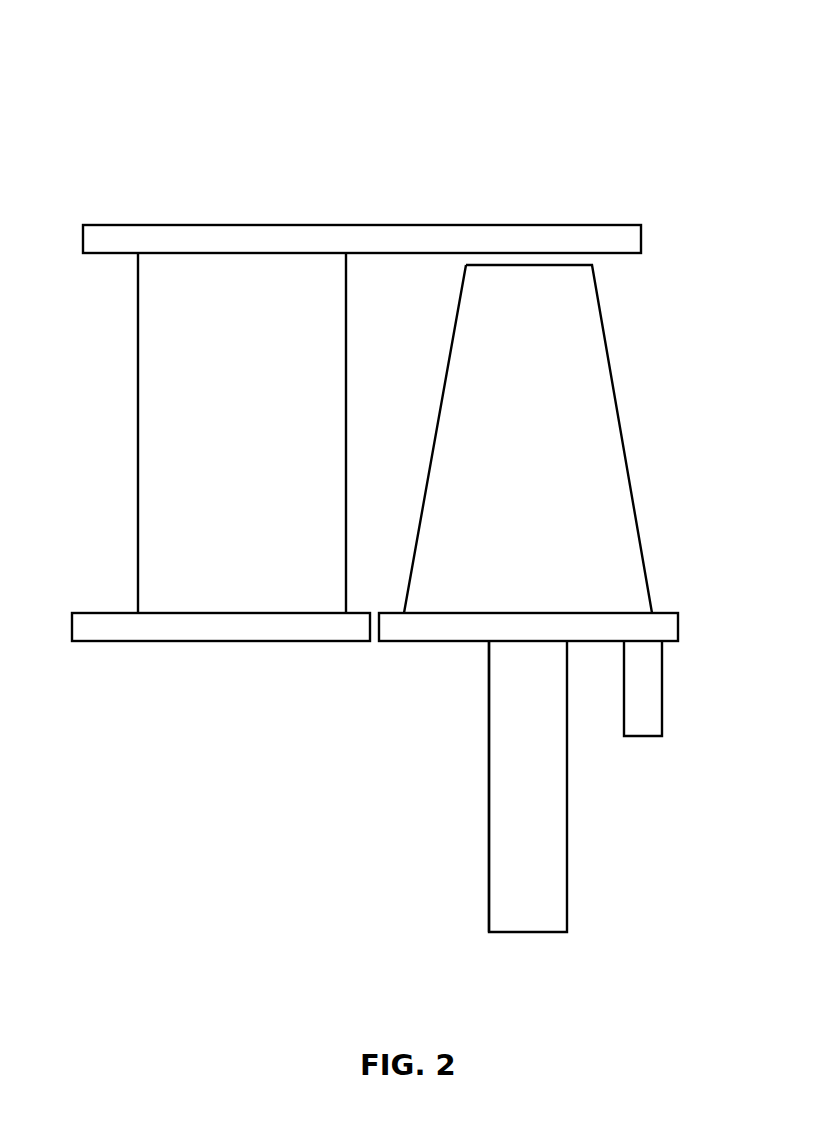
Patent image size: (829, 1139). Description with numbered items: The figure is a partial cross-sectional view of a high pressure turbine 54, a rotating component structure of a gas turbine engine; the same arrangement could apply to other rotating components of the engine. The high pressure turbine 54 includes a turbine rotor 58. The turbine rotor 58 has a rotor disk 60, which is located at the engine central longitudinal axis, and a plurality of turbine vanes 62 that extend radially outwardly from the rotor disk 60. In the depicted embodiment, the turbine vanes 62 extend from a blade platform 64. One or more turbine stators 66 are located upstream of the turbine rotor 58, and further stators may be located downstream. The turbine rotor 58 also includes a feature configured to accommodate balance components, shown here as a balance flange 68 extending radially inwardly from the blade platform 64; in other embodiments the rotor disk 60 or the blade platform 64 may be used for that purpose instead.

The high pressure turbine 54 is at (104, 53).
The turbine rotor 58 is at (552, 888).
The rotor disk 60 is at (505, 723).
The turbine vanes 62 is at (544, 450).
The blade platform 64 is at (662, 623).
The turbine stators 66 is at (256, 444).
The balance flange 68 is at (643, 716).